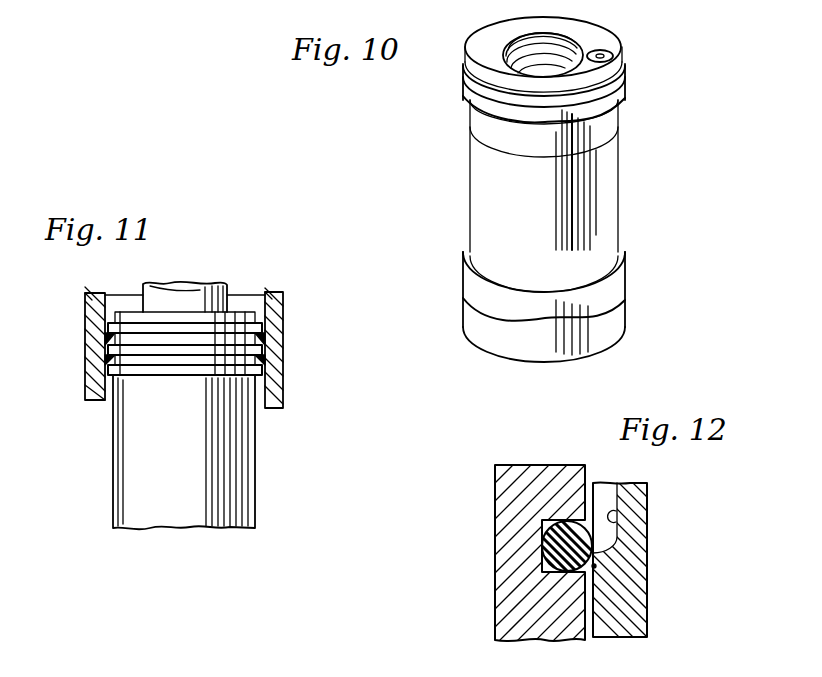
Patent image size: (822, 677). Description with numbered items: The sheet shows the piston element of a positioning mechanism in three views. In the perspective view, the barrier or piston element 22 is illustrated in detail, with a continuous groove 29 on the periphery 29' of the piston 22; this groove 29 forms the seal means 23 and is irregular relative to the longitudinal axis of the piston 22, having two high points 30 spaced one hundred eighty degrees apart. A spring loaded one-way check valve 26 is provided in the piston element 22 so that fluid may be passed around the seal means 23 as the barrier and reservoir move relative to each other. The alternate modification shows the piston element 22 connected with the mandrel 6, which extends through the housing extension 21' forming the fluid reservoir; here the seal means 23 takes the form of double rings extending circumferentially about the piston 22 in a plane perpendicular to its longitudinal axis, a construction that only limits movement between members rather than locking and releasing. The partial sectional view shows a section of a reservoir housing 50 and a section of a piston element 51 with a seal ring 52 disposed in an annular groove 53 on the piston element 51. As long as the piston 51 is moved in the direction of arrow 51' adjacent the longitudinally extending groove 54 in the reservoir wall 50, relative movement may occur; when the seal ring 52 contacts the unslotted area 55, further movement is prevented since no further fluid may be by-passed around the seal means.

In FIG. 11, the mandrel 6 is at (222, 292).
In FIG. 11, the housing extension 21' is at (212, 342).
In FIG. 10, the piston element 22 is at (604, 236).
In FIG. 11, the piston element 22 is at (232, 492).
In FIG. 11, the seal means 23 is at (268, 336).
In FIG. 10, the check valves 26 is at (616, 56).
In FIG. 10, the continuous groove 29 is at (570, 195).
In FIG. 10, the periphery 29' is at (647, 192).
In FIG. 10, the high points 30 is at (540, 125).
In FIG. 12, the reservoir housing 50 is at (631, 581).
In FIG. 12, the piston element 51 is at (514, 535).
In FIG. 12, the arrow 51' is at (458, 633).
In FIG. 12, the seal ring 52 is at (545, 540).
In FIG. 12, the annular groove 53 is at (545, 530).
In FIG. 12, the longitudinally extending groove 54 is at (615, 518).
In FIG. 12, the unslotted area 55 is at (594, 566).